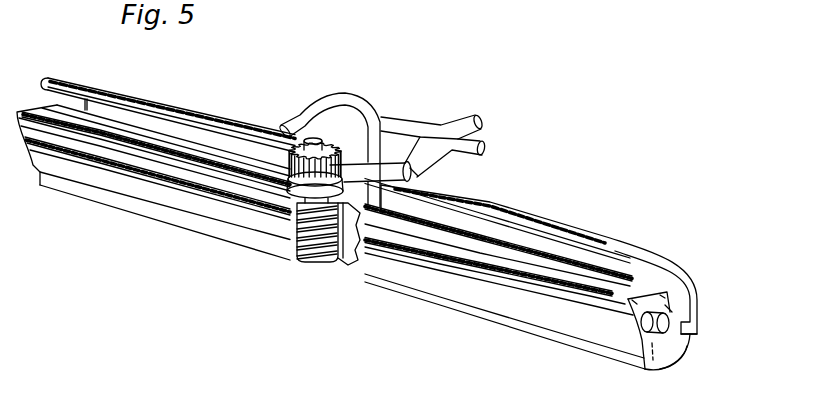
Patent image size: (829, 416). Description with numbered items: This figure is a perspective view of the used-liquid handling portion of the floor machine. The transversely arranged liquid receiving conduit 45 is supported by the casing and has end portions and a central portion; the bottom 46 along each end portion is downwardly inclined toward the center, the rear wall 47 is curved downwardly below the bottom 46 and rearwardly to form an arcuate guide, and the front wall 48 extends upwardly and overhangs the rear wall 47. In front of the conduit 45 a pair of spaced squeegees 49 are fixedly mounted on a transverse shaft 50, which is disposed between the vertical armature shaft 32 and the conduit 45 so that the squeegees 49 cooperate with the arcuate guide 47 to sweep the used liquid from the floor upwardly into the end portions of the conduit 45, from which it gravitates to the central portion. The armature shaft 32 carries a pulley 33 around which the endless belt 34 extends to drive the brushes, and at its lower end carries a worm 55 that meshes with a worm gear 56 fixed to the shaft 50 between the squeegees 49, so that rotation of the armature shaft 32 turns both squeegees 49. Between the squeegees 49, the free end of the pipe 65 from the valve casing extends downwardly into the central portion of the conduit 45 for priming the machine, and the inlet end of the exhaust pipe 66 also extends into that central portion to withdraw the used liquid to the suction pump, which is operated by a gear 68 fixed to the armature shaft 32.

The armature shaft 32 is at (317, 140).
The pulley 33 is at (295, 200).
The endless belt 34 is at (467, 118).
The liquid receiving conduit 45 is at (670, 323).
The bottom 46 is at (698, 337).
The rear wall 47 is at (676, 353).
The front wall 48 is at (681, 262).
The squeegees 49 is at (177, 197).
The transverse shaft 50 is at (667, 316).
The worm 55 is at (303, 250).
The worm gear 56 is at (350, 264).
The pipe 65 is at (428, 163).
The exhaust pipe 66 is at (318, 108).
The gear 68 is at (332, 143).